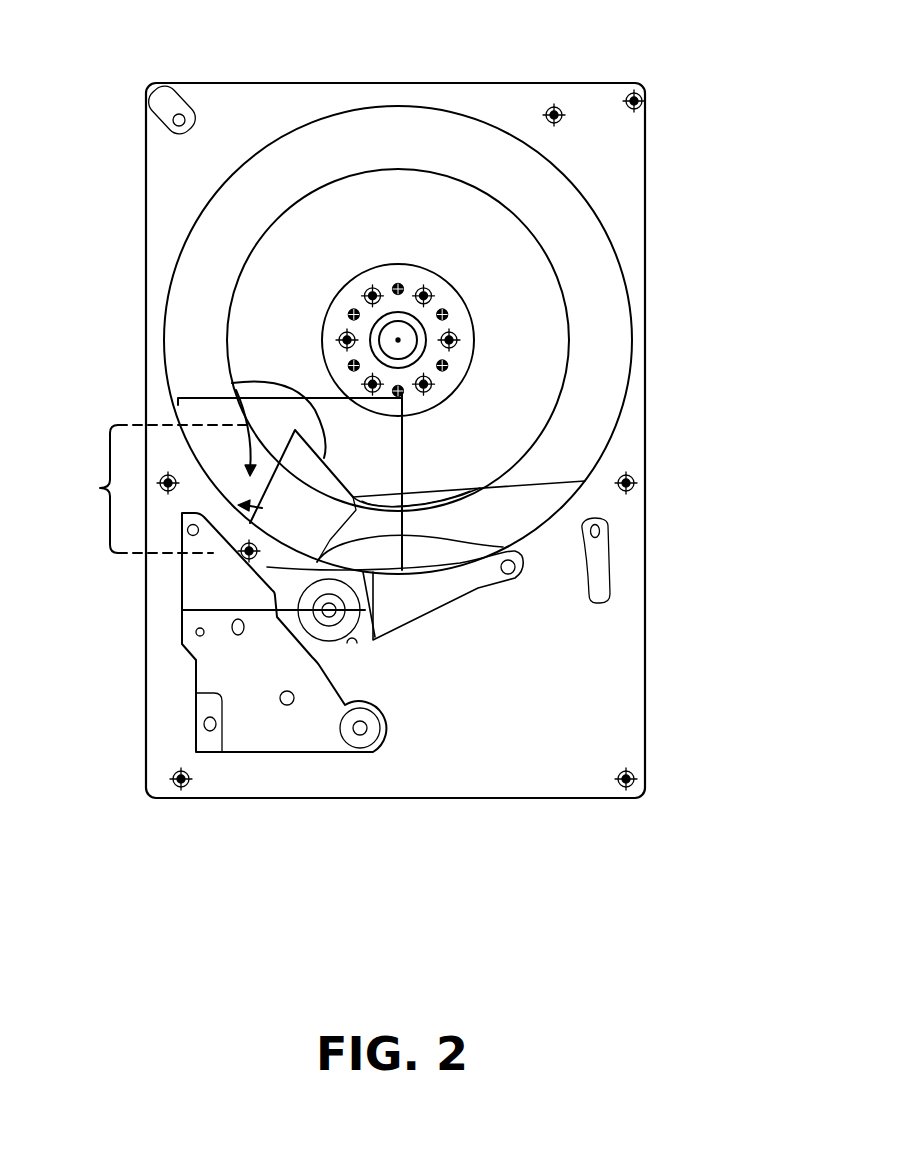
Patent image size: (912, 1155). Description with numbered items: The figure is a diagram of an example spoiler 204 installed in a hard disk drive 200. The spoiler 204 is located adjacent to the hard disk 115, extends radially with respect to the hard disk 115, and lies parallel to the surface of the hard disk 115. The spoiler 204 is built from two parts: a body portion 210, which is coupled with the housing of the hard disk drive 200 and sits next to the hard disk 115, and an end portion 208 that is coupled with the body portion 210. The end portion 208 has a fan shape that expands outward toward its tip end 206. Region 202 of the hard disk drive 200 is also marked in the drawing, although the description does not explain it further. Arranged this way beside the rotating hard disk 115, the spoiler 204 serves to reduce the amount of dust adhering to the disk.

The hard disk drive 200 is at (62, 33).
The hard disk 115 is at (632, 346).
The actuator base plate 202 is at (146, 595).
The spoiler 204 is at (154, 489).
The tip end 206 is at (232, 383).
The end portion 208 is at (513, 489).
The body portion 210 is at (480, 547).